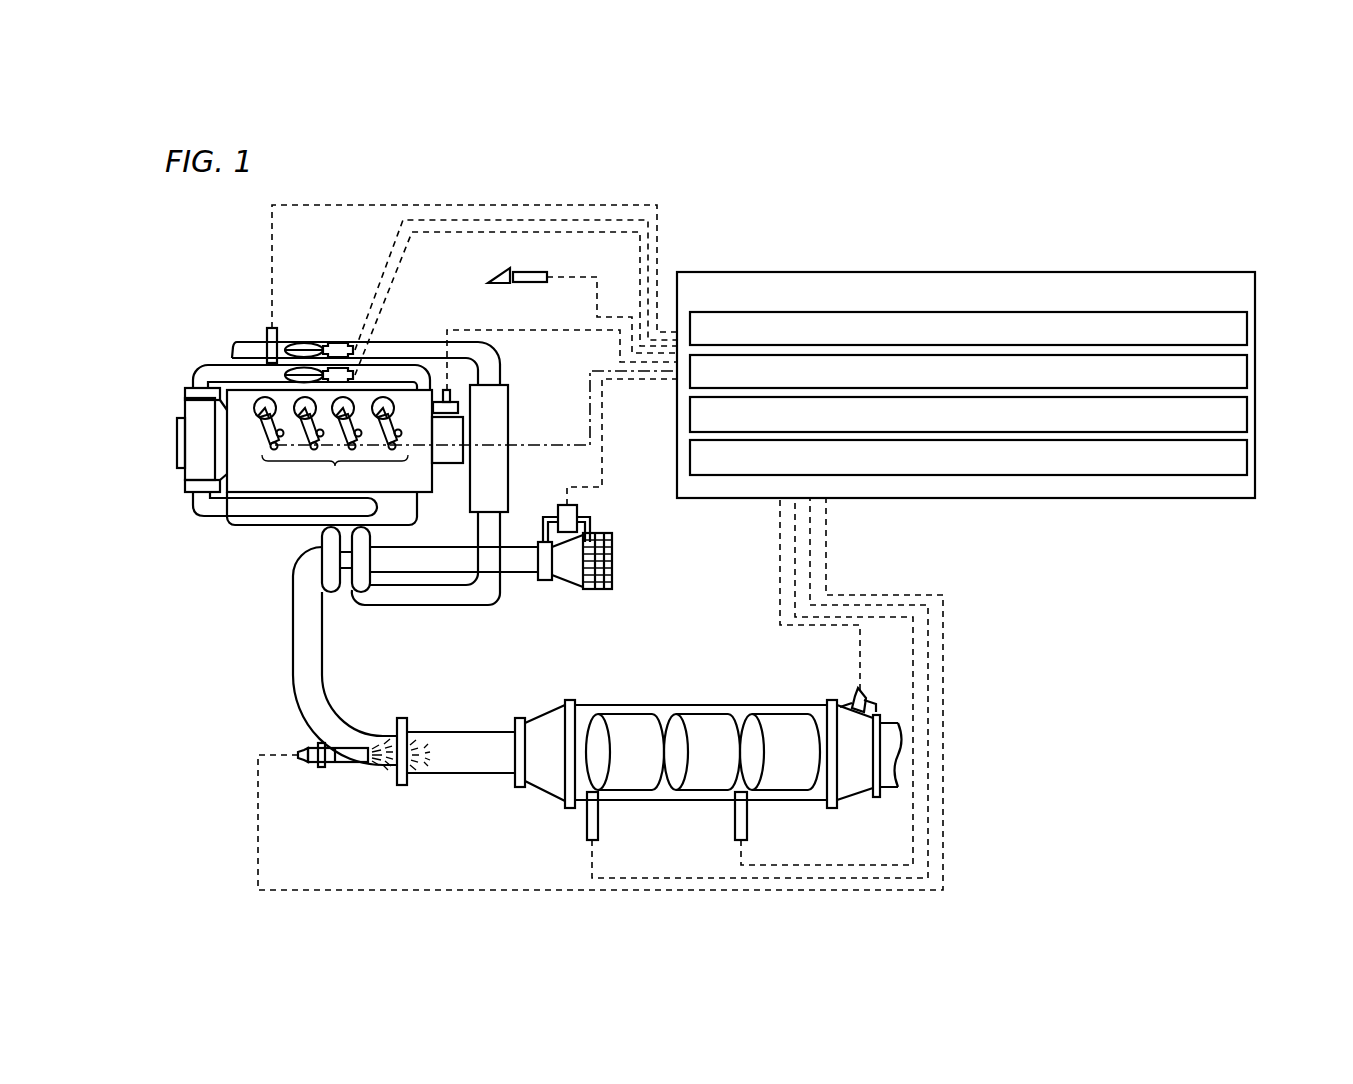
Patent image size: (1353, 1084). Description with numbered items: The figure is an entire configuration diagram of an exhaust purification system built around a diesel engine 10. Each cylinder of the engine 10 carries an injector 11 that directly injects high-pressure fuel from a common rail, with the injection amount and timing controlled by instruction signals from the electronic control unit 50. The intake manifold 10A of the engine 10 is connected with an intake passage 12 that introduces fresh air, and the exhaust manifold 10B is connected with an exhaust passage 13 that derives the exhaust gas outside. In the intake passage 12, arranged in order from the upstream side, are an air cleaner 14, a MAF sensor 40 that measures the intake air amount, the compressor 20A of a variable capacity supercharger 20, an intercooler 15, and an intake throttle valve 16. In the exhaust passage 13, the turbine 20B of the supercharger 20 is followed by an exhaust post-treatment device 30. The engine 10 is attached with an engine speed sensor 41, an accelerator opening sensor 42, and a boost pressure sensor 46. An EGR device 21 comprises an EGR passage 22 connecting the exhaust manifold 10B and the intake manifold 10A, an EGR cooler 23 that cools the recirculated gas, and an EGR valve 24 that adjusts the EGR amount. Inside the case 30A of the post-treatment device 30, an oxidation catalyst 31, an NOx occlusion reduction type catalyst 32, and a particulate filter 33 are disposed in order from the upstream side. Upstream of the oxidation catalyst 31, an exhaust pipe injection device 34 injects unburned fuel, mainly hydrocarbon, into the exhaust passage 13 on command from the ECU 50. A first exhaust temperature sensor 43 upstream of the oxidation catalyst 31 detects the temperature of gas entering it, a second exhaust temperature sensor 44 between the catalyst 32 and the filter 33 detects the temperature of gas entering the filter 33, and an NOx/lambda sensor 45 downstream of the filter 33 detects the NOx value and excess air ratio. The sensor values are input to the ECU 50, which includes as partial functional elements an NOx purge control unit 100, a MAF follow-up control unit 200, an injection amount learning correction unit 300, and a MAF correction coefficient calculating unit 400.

The diesel engine 10 is at (413, 400).
The intake manifold 10A is at (243, 357).
The exhaust manifold 10B is at (265, 527).
The injector 11 is at (331, 444).
The intake passage 12 is at (452, 605).
The exhaust passage 13 is at (297, 640).
The air cleaner 14 is at (600, 527).
The intercooler 15 is at (500, 413).
The intake throttle valve 16 is at (307, 343).
The variable capacity supercharger 20 is at (375, 615).
The compressor 20A is at (361, 594).
The turbine 20B is at (331, 594).
The EGR device 21 is at (196, 359).
The EGR passage 22 is at (215, 507).
The EGR cooler 23 is at (189, 434).
The EGR valve 24 is at (303, 367).
The exhaust post-treatment device 30 is at (649, 713).
The case 30A is at (617, 705).
The oxidation catalyst 31 is at (619, 765).
The NOx occlusion reduction type catalyst 32 is at (696, 765).
The particulate filter 33 is at (771, 765).
The exhaust pipe injection device 34 is at (347, 762).
The MAF sensor 40 is at (567, 505).
The engine speed sensor 41 is at (447, 388).
The accelerator opening sensor 42 is at (530, 270).
The first exhaust temperature sensor 43 is at (594, 813).
The second exhaust temperature sensor 44 is at (743, 813).
The NOx/lambda sensor 45 is at (856, 694).
The boost pressure sensor 46 is at (268, 330).
The electronic control unit 50 is at (999, 357).
The NOx purge control unit 100 is at (1255, 331).
The MAF follow-up control unit 200 is at (1255, 371).
The injection amount learning correction unit 300 is at (1255, 413).
The MAF correction coefficient calculating unit 400 is at (1255, 457).